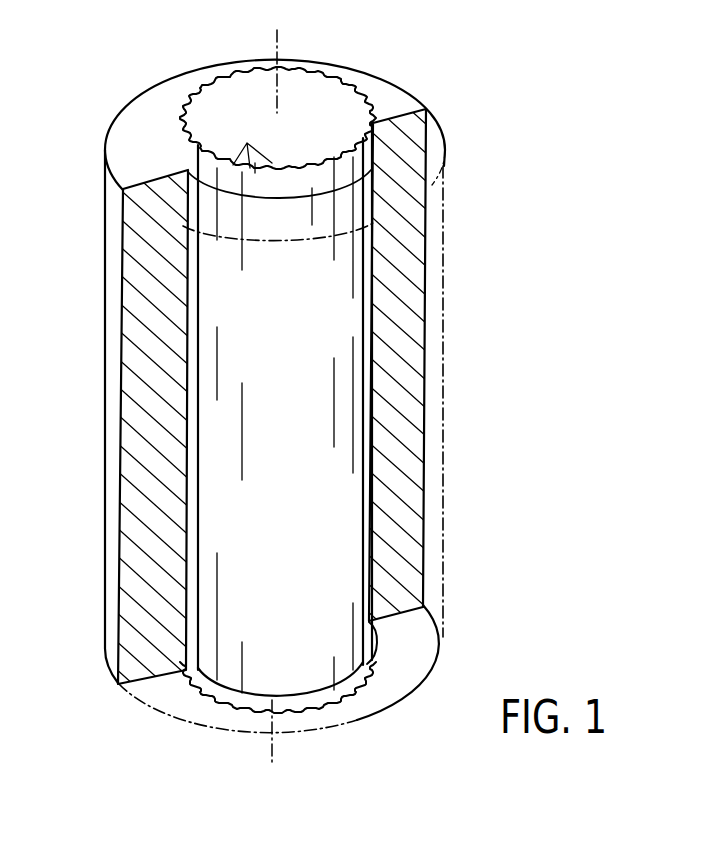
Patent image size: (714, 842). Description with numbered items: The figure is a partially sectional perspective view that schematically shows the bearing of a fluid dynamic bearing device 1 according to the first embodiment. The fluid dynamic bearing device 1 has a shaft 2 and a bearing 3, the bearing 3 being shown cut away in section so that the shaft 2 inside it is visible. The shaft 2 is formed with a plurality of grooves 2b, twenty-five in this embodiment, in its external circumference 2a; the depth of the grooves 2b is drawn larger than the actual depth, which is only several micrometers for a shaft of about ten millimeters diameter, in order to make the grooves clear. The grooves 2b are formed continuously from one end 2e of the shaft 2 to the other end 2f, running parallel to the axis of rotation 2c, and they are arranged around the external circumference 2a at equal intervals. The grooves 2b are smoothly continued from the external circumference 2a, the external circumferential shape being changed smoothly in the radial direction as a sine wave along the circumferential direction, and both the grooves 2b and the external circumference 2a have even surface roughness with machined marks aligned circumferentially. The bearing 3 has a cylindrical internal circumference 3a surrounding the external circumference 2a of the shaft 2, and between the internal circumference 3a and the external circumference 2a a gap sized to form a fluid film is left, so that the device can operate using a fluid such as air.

The fluid dynamic bearing device 1 is at (425, 88).
The shaft 2 is at (315, 82).
The external circumference 2a is at (240, 542).
The grooves 2b is at (252, 145).
The axis of rotation 2c is at (275, 43).
The one end of the shaft 2e is at (207, 90).
The other end of the shaft 2f is at (236, 712).
The bearing 3 is at (125, 134).
The internal circumference 3a is at (191, 346).